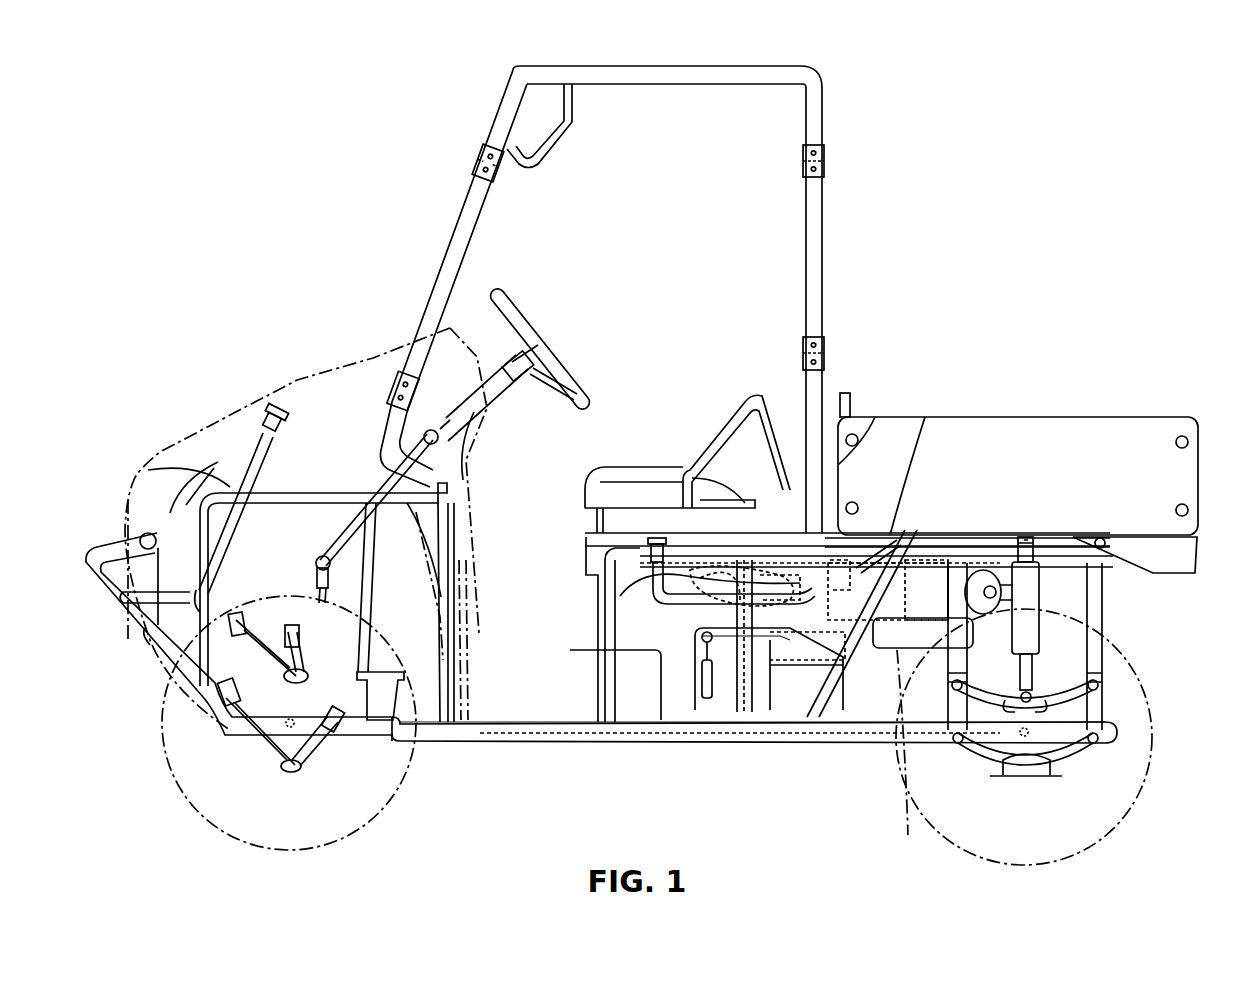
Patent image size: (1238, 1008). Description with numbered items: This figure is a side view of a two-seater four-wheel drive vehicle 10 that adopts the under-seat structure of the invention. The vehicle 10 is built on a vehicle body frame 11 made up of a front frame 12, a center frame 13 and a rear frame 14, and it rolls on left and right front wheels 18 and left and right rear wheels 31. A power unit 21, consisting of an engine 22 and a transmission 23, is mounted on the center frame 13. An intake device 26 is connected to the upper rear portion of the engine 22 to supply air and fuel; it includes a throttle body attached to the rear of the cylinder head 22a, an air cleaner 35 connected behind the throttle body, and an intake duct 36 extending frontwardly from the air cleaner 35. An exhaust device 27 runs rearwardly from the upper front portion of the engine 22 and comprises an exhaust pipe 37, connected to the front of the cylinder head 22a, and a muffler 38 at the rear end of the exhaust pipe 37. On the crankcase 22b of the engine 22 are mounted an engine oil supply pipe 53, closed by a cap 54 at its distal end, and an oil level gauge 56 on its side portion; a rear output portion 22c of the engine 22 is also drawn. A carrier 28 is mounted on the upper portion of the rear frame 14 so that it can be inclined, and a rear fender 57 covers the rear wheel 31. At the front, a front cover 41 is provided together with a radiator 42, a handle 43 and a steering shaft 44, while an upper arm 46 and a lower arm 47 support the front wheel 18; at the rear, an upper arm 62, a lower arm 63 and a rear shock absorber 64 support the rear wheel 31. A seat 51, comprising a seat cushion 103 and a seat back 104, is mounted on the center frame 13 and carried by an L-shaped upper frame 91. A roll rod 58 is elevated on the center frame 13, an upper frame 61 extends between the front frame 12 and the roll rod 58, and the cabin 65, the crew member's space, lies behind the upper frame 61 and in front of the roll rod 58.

The vehicle 10 is at (300, 165).
The vehicle body frame 11 is at (511, 745).
The front frame 12 is at (328, 486).
The center frame 13 is at (566, 745).
The rear frame 14 is at (1105, 615).
The front wheels 18 is at (230, 832).
The power unit 21 is at (661, 694).
The engine 22 is at (787, 568).
The cylinder head 22a is at (712, 578).
The crankcase 22b is at (800, 625).
The rear output portion 22c is at (862, 545).
The transmission 23 is at (793, 692).
The intake device 26 is at (883, 663).
The exhaust device 27 is at (932, 592).
The carrier 28 is at (1068, 412).
The rear wheels 31 is at (1095, 843).
The air cleaner 35 is at (915, 637).
The intake duct 36 is at (586, 583).
The exhaust pipe 37 is at (740, 605).
The muffler 38 is at (1000, 605).
The front cover 41 is at (177, 447).
The radiator 42 is at (245, 420).
The handle 43 is at (508, 308).
The steering shaft 44 is at (460, 413).
The upper arm 46 is at (253, 655).
The lower arm 47 is at (268, 754).
The seat 51 is at (760, 373).
The engine oil supply pipe 53 is at (680, 613).
The cap 54 is at (660, 540).
The oil level gauge 56 is at (718, 690).
The rear fender 57 is at (1163, 553).
The roll rod 58 is at (818, 248).
The upper frame 61 is at (458, 238).
The upper arm 62 is at (1075, 690).
The lower arm 63 is at (1080, 755).
The rear shock absorber 64 is at (1030, 630).
The cabin 65 is at (493, 603).
The upper frame 91 is at (607, 658).
The seat cushion 103 is at (590, 497).
The seat back 104 is at (757, 393).